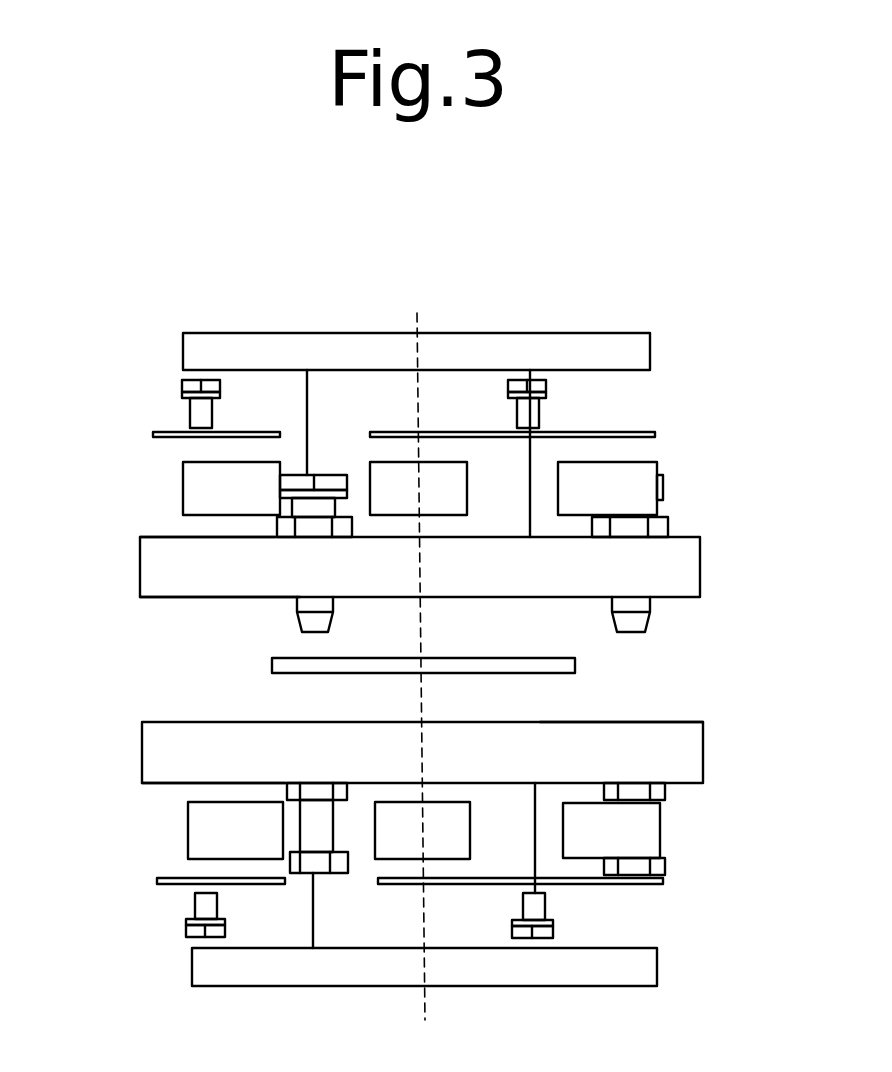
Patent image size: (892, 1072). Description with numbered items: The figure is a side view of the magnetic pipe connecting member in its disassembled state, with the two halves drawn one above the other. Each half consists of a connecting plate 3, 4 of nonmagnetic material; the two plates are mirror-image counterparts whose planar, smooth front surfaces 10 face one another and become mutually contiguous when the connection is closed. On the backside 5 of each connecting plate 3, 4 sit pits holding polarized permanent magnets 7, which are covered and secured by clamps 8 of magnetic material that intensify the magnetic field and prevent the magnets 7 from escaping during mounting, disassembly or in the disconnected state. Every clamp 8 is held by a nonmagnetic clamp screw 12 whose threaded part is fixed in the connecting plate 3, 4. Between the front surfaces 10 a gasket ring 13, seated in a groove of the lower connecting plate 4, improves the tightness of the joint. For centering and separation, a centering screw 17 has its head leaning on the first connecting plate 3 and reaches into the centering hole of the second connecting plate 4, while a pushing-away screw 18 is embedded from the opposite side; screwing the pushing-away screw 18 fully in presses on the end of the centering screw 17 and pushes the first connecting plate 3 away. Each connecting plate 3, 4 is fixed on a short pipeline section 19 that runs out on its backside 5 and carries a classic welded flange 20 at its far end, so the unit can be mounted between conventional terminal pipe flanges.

The connecting plate 3 is at (685, 565).
The connecting plate 4 is at (685, 748).
The backside 5 is at (165, 537).
The magnet 7 is at (200, 483).
The clamp 8 is at (240, 432).
The front surface 10 is at (195, 600).
The clamp screw 12 is at (200, 410).
The gasket ring 13 is at (283, 668).
The centering screw 17 is at (328, 478).
The pushing-away screw 18 is at (327, 830).
The pipeline section 19 is at (462, 392).
The flange 20 is at (642, 352).